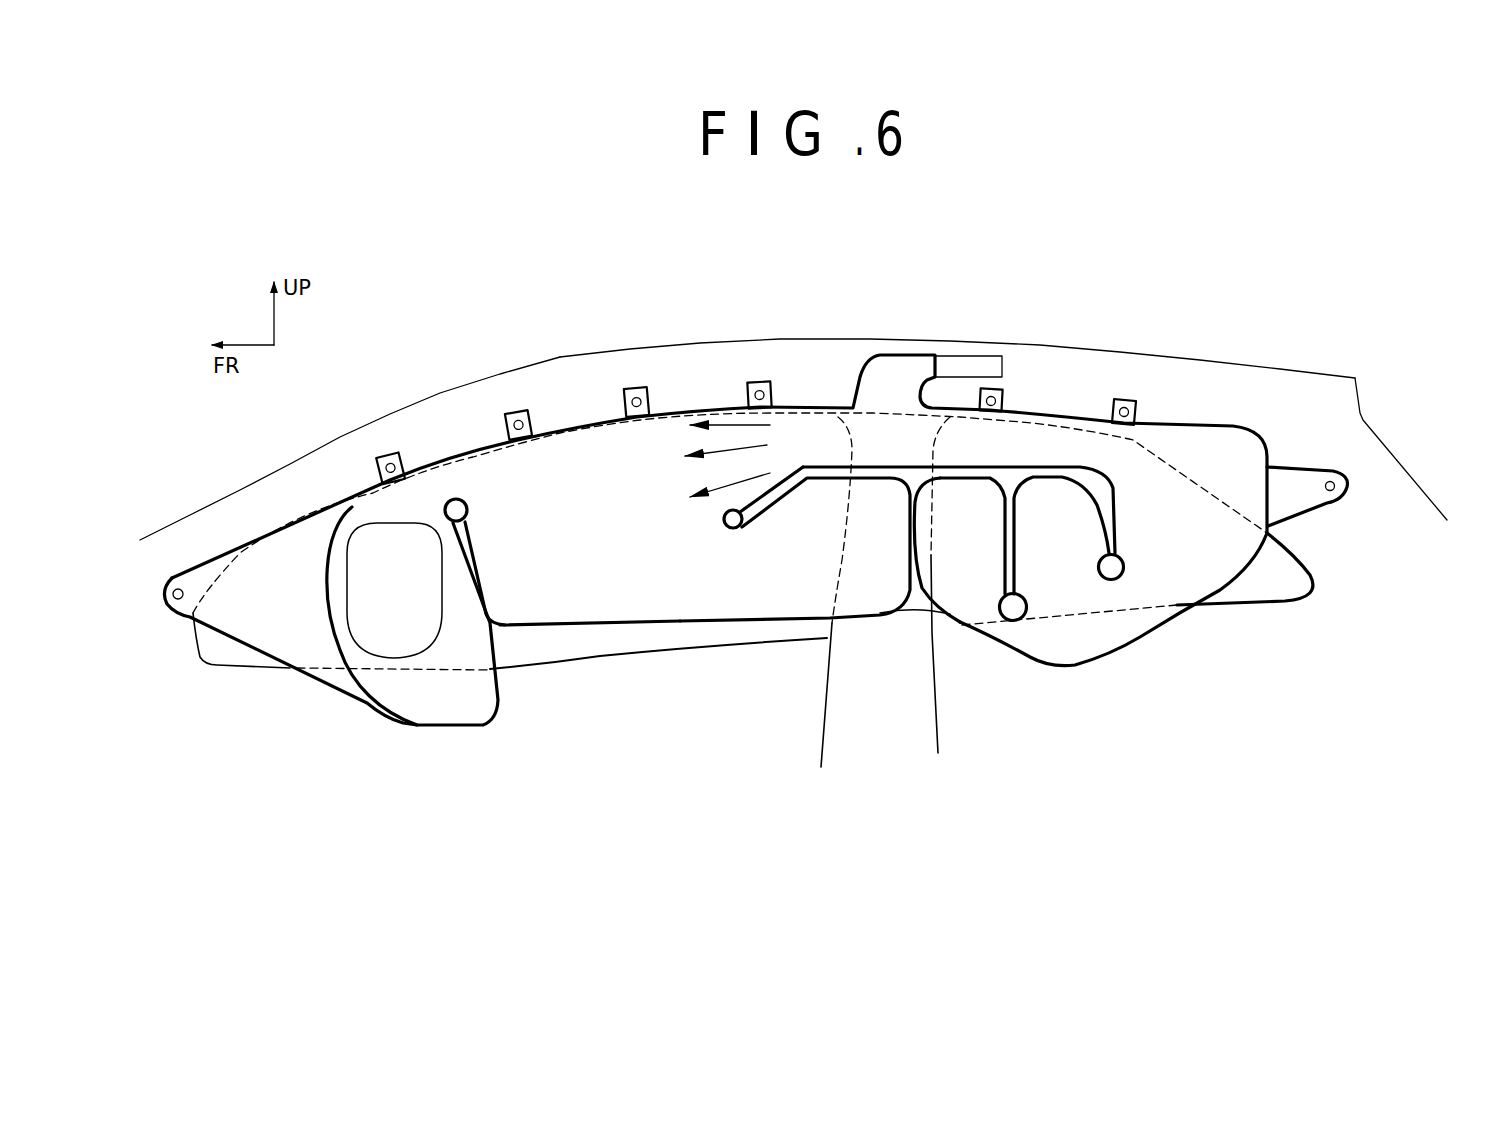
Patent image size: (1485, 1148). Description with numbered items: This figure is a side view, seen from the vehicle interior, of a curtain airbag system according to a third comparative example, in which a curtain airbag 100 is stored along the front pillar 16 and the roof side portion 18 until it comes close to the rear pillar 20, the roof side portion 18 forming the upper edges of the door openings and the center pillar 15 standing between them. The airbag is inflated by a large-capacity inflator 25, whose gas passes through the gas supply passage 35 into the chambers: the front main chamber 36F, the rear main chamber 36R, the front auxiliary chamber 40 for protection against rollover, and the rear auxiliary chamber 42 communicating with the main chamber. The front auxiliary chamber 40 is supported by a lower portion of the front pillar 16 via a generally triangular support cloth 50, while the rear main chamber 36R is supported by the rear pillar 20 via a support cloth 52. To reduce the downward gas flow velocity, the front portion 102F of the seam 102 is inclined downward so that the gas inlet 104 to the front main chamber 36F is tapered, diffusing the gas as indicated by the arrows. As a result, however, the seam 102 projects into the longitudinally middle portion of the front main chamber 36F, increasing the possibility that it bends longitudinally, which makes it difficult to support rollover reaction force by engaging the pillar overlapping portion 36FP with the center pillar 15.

The center pillar 15 is at (827, 735).
The front pillar 16 is at (281, 473).
The roof side portion 18 is at (597, 367).
The rear pillar 20 is at (1377, 473).
The inflator 25 is at (973, 366).
The gas supply passage 35 is at (867, 430).
The front main chamber 36F is at (575, 612).
The pillar overlapping portion 36FP is at (752, 607).
The rear main chamber 36R is at (1216, 573).
The front auxiliary chamber 40 is at (457, 707).
The rear auxiliary chamber 42 is at (1093, 640).
The support cloth 50 is at (277, 637).
The support cloth 52 is at (1313, 493).
The curtain airbag 100 is at (670, 626).
The seam 102 is at (827, 478).
The front portion of seam 102F is at (770, 500).
The gas inlet 104 is at (777, 447).